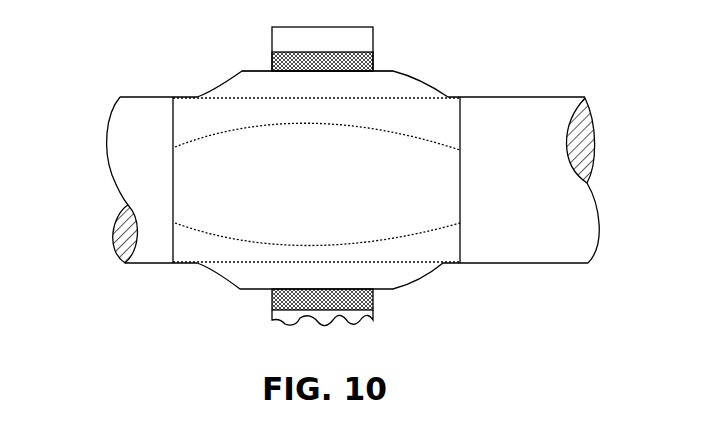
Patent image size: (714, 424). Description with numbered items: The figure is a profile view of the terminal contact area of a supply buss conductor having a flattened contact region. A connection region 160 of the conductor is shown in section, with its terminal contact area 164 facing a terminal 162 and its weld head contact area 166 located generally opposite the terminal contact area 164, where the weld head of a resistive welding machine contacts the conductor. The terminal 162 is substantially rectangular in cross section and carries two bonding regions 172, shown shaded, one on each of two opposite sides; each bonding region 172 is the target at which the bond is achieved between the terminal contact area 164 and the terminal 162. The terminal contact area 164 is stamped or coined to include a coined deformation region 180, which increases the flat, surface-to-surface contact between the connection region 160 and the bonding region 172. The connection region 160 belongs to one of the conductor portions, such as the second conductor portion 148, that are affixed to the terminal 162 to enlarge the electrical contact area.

The second conductor portion 148 is at (589, 101).
The connection region 160 is at (430, 110).
The terminal 162 is at (364, 33).
The terminal contact area 164 is at (247, 83).
The weld head contact area 166 is at (212, 193).
The bonding region 172 is at (354, 62).
The coined deformation region 180 is at (378, 83).